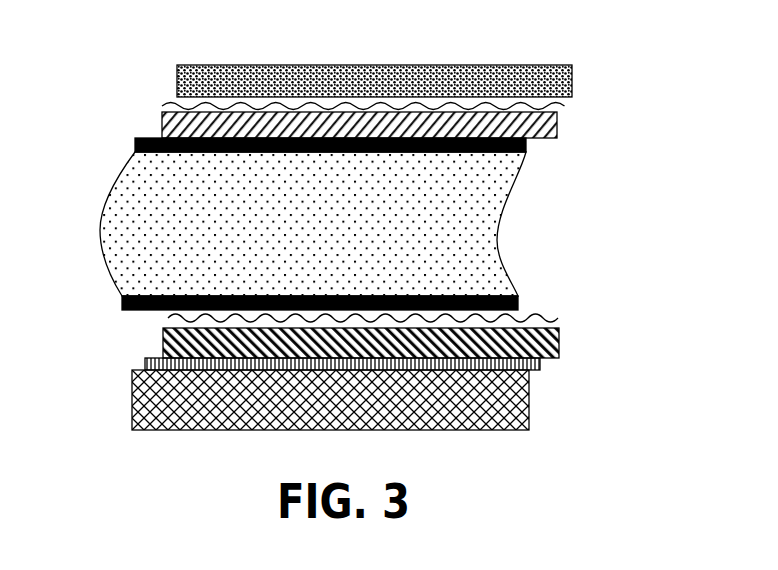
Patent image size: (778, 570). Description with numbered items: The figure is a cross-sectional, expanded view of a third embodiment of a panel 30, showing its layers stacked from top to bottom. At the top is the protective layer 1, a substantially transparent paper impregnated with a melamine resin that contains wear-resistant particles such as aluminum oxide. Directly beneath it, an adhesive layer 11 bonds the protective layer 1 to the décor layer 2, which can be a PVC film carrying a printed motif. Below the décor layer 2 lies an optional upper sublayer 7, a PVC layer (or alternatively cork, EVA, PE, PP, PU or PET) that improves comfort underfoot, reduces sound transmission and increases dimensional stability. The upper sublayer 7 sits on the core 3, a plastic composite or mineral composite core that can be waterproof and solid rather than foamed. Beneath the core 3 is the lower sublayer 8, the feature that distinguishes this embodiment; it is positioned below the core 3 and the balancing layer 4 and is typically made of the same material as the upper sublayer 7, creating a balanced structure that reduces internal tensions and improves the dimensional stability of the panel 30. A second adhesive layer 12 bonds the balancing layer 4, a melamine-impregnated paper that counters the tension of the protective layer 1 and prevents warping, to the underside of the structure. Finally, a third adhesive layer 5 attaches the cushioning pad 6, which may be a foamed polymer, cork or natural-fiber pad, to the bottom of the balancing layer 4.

The panel 30 is at (428, 43).
The protective layer 1 is at (572, 65).
The adhesive layer 11 is at (566, 106).
The décor layer 2 is at (559, 133).
The upper sublayer 7 is at (141, 139).
The core 3 is at (148, 210).
The lower sublayer 8 is at (510, 296).
The second adhesive layer 12 is at (527, 310).
The balancing layer 4 is at (553, 342).
The third adhesive layer 5 is at (145, 362).
The cushioning pad 6 is at (148, 396).